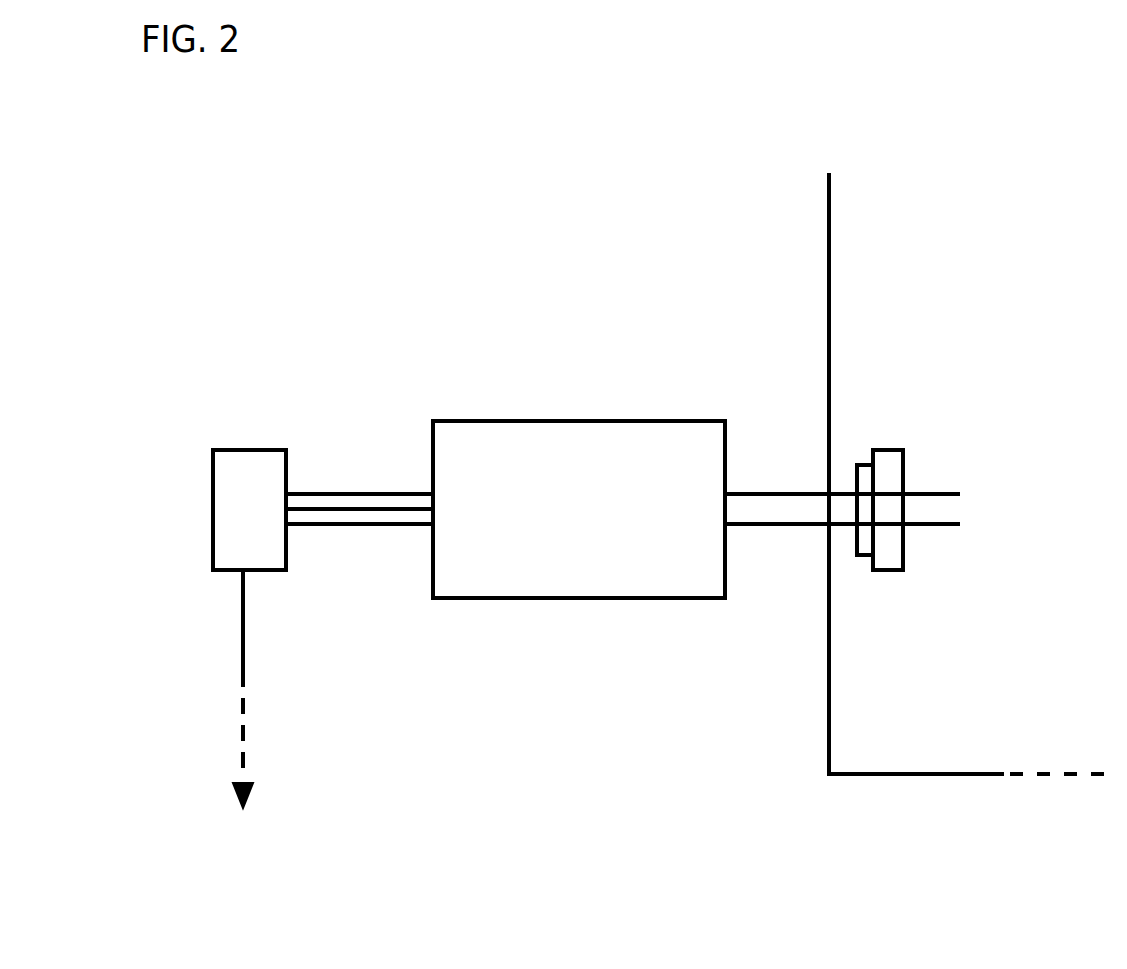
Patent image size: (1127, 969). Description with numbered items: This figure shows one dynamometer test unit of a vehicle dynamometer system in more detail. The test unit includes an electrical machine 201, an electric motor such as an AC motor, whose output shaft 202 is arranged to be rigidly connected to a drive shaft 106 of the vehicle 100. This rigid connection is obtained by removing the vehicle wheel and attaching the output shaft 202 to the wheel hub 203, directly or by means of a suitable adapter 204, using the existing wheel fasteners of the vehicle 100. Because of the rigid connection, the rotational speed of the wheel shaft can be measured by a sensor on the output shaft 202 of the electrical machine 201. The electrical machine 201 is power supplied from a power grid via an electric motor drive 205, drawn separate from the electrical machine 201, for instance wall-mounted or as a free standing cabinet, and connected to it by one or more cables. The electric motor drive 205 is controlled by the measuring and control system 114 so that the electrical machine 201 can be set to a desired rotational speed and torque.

The vehicle 100 is at (903, 750).
The drive shaft 106 is at (920, 494).
The measuring and control system 114 is at (270, 715).
The electrical machine 201 is at (710, 555).
The output shaft 202 is at (815, 494).
The wheel hub 203 is at (885, 550).
The adapter 204 is at (867, 464).
The electric motor drive 205 is at (257, 465).